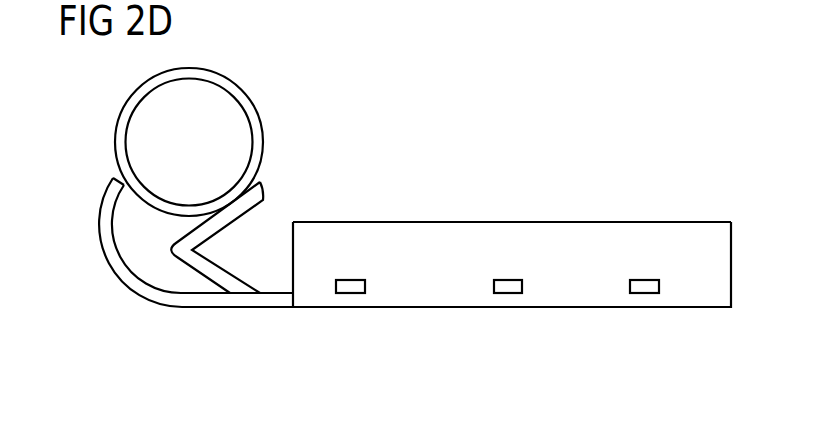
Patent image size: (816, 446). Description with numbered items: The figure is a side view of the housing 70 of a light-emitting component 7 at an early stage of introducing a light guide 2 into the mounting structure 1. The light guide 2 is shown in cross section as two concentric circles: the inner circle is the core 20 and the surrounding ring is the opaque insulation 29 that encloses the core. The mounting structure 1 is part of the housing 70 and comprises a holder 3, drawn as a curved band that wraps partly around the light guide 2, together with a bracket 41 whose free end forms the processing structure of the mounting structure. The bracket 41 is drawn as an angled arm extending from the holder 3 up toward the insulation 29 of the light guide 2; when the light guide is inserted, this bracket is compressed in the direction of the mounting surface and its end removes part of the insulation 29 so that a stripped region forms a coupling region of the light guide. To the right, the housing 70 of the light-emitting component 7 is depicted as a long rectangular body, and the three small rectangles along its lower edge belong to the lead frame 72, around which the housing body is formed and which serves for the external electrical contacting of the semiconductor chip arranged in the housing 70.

The mounting structure 1 is at (193, 242).
The light guide 2 is at (192, 142).
The holder 3 is at (105, 226).
The light-emitting component 7 is at (505, 277).
The core 20 is at (237, 142).
The insulation 29 is at (248, 107).
The bracket 41 is at (264, 188).
The housing 70 is at (687, 233).
The lead frame 72 is at (505, 293).